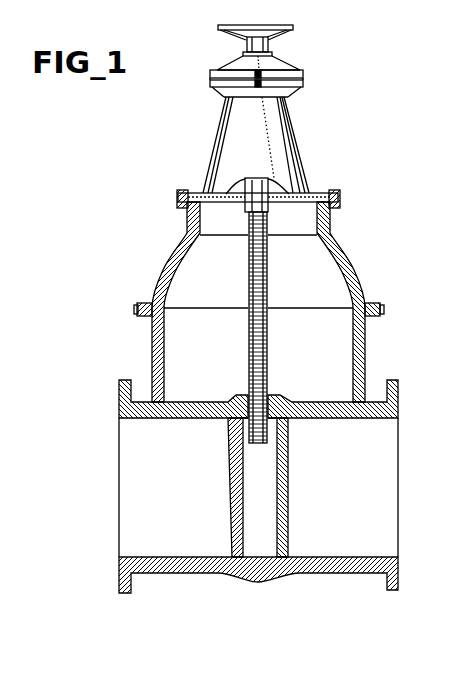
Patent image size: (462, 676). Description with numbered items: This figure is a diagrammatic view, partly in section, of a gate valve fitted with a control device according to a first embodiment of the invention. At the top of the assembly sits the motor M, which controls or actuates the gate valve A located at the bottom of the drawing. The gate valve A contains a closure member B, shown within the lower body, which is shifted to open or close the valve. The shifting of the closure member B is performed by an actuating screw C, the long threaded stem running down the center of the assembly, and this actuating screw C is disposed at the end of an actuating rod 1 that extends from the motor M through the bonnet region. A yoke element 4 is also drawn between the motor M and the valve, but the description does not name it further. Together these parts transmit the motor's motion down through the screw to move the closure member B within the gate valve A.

The motor M is at (283, 66).
The yoke 4 is at (225, 131).
The actuating rod 1 is at (258, 181).
The actuating screw C is at (268, 297).
The gate valve A is at (310, 572).
The closure member B is at (229, 495).